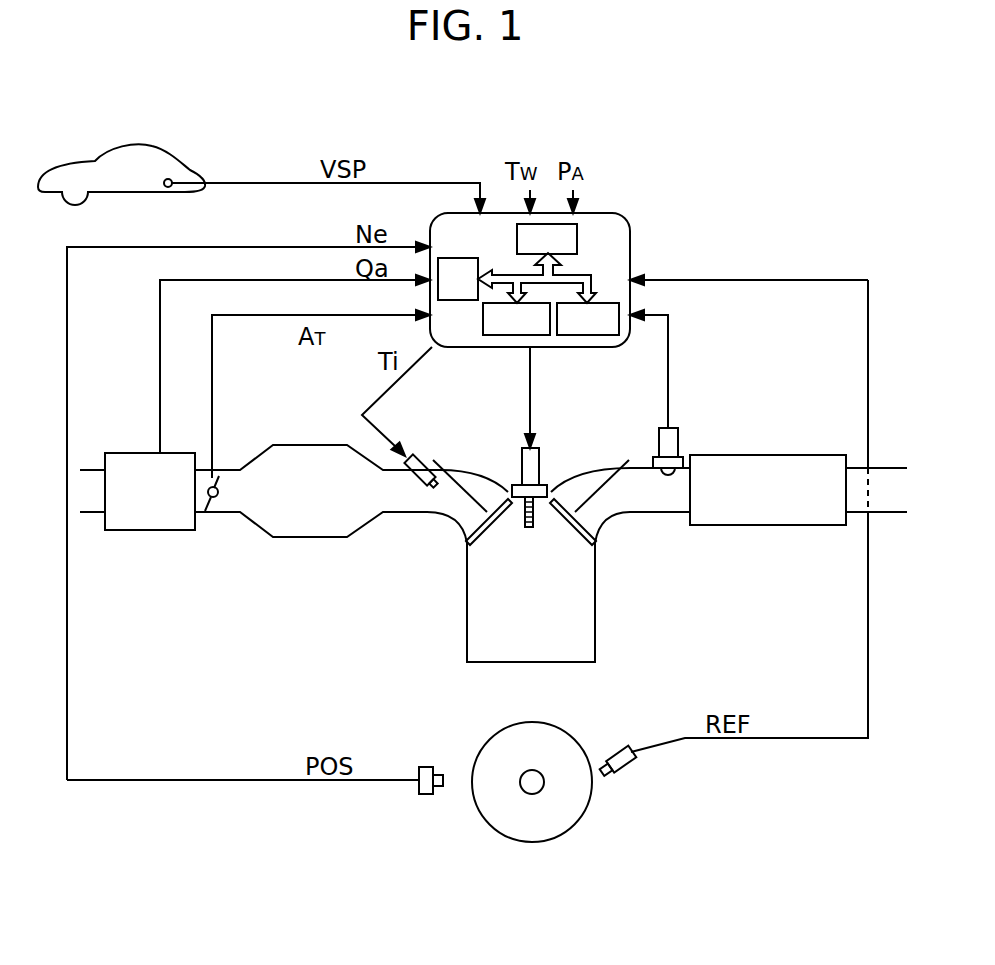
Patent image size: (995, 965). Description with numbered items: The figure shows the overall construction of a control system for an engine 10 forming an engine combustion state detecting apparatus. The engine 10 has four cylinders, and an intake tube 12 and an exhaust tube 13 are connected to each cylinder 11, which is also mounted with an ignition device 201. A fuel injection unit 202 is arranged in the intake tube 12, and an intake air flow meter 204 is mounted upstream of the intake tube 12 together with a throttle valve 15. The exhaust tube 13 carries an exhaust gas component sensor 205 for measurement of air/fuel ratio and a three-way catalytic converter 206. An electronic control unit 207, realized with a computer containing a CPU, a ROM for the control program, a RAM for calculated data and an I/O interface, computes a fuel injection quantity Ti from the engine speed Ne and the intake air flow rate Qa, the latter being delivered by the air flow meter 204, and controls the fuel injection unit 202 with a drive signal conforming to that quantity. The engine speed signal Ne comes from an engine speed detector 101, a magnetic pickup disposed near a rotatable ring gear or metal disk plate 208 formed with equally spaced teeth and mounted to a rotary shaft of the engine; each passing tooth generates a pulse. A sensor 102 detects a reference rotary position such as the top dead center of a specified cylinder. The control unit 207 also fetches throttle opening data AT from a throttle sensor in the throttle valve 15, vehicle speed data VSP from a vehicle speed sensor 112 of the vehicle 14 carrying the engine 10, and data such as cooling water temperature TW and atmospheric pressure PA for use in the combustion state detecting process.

The vehicle 14 is at (170, 152).
The vehicle speed sensor 112 is at (170, 187).
The electronic control unit 207 is at (630, 258).
The engine 10 is at (497, 444).
The fuel injection unit 202 is at (430, 450).
The ignition device 201 is at (540, 462).
The exhaust gas component sensor 205 is at (682, 437).
The intake air flow meter 204 is at (160, 530).
The throttle valve 15 is at (220, 512).
The intake tube 12 is at (411, 513).
The exhaust tube 13 is at (667, 512).
The three-way catalytic converter 206 is at (782, 525).
The cylinder 11 is at (595, 620).
The engine speed detector 101 is at (425, 767).
The ring gear or metal disk plate 208 is at (573, 738).
The reference rotary position sensor 102 is at (633, 768).